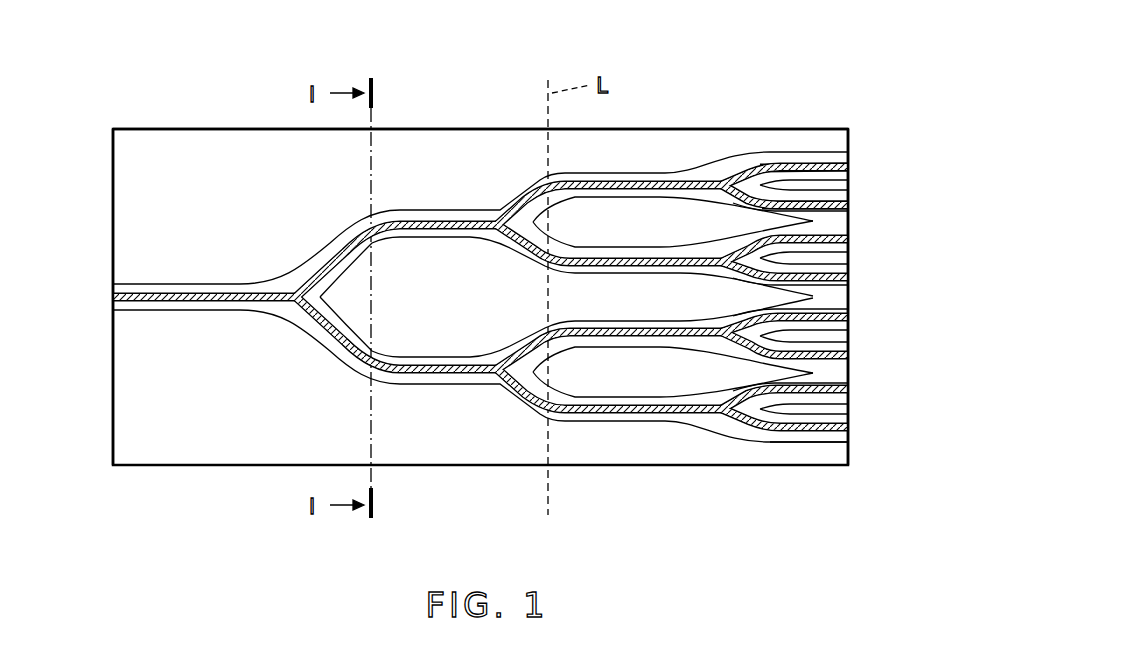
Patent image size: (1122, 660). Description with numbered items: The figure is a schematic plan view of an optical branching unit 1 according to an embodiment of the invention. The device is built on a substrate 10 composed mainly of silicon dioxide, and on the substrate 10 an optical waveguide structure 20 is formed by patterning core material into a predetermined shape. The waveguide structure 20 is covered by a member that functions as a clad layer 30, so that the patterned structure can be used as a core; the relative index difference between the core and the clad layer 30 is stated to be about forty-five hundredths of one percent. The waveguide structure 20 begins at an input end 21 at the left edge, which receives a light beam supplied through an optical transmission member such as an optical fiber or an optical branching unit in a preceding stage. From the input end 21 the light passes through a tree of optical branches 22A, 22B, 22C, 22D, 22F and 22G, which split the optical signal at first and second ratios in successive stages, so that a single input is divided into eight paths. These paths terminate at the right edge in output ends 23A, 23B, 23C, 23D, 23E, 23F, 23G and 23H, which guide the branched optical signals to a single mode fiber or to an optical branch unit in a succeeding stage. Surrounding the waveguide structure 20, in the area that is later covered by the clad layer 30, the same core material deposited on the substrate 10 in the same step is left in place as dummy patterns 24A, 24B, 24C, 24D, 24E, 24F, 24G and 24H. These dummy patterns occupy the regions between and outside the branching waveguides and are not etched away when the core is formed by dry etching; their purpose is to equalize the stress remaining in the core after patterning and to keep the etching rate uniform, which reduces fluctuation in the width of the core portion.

The optical branching unit 1 is at (735, 117).
The substrate 10 is at (183, 452).
The optical waveguide structure 20 is at (162, 305).
The input end 21 is at (115, 298).
The optical branch 22A is at (288, 287).
The optical branch 22B is at (498, 216).
The optical branch 22C is at (492, 380).
The optical branch 22D is at (697, 178).
The optical branch 22F is at (672, 266).
The optical branch 22G is at (703, 418).
The output end 23A is at (850, 158).
The output end 23B is at (850, 205).
The output end 23C is at (850, 240).
The output end 23D is at (852, 278).
The output end 23E is at (850, 318).
The output end 23F is at (852, 356).
The output end 23G is at (850, 389).
The output end 23H is at (852, 436).
The dummy pattern 24A is at (210, 180).
The dummy pattern 24B is at (257, 422).
The dummy pattern 24C is at (566, 297).
The dummy pattern 24D is at (673, 222).
The dummy pattern 24E is at (897, 170).
The dummy pattern 24F is at (840, 258).
The dummy pattern 24G is at (840, 336).
The dummy pattern 24H is at (840, 409).
The clad layer 30 is at (772, 452).